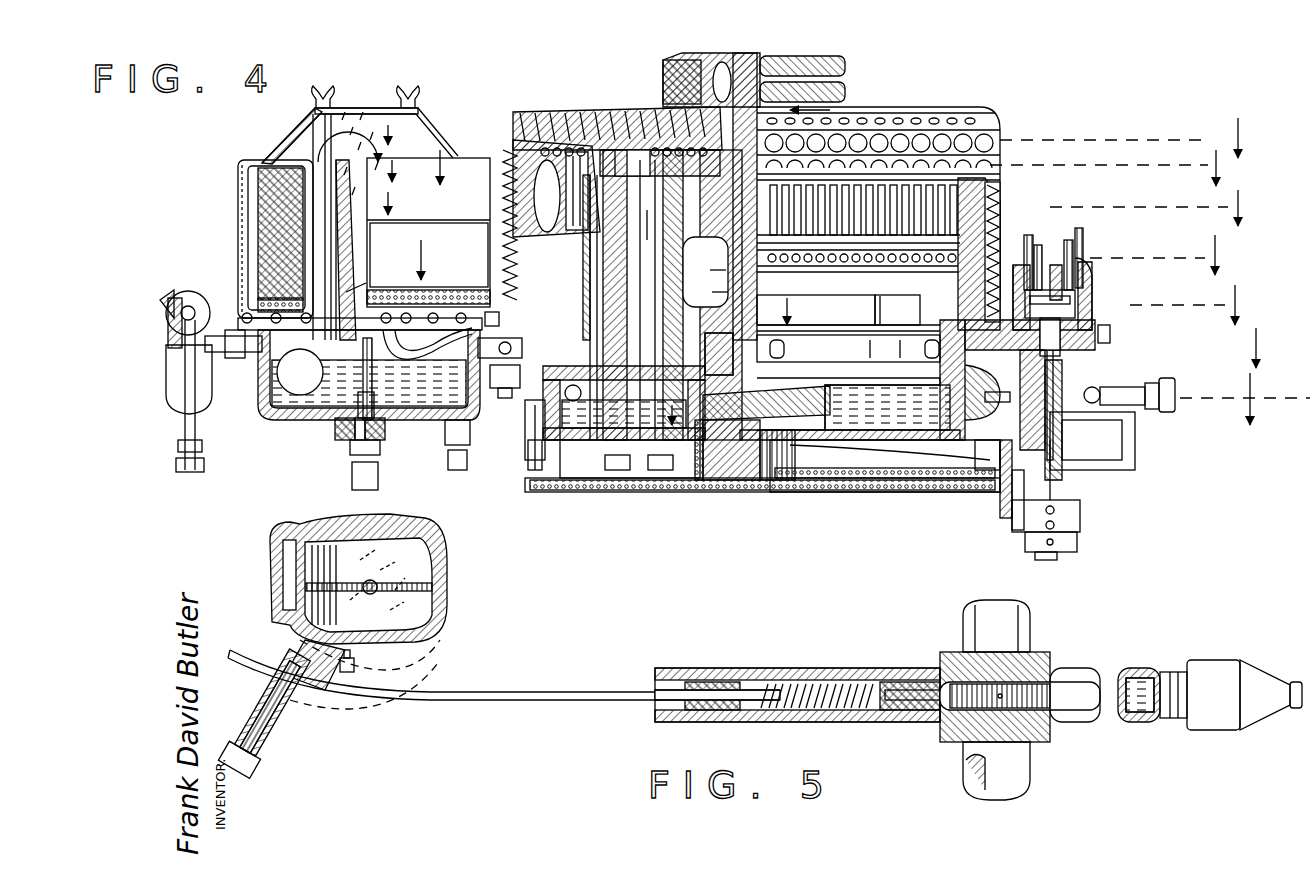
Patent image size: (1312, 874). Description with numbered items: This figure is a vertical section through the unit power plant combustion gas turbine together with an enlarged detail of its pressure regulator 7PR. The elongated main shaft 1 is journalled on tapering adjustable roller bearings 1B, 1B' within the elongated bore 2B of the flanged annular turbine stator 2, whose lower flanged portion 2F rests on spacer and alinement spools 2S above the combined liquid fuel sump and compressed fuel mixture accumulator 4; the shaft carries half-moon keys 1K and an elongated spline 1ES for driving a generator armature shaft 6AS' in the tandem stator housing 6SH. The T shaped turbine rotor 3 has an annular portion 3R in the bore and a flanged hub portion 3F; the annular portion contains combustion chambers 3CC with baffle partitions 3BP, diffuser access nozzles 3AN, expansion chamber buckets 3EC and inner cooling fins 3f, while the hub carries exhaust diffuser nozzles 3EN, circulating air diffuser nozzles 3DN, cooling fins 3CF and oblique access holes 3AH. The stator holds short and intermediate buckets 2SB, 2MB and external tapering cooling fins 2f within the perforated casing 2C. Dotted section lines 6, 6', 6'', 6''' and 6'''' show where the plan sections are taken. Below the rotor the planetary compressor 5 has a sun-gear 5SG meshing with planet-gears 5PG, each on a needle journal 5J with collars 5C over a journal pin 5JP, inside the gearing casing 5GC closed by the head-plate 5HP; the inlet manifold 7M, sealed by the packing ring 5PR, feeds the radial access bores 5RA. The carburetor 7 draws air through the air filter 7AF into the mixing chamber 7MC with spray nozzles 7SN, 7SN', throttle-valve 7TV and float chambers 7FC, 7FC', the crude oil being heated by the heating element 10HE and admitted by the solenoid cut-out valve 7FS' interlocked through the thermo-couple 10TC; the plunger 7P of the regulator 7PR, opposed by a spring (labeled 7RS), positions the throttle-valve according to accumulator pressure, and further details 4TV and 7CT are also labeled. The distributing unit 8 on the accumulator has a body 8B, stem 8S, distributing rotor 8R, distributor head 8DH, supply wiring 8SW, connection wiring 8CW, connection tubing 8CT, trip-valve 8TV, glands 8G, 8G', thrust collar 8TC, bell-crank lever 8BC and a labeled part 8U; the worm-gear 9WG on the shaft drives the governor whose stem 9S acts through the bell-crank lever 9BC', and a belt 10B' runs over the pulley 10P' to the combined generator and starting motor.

In FIG. 4, the main shaft 1 is at (745, 482).
In FIG. 4, the upper roller bearing 1B is at (705, 253).
In FIG. 4, the half-moon keys 1K is at (728, 268).
In FIG. 4, the lower roller bearing 1B' is at (708, 288).
In FIG. 4, the elongated spline 1ES is at (775, 480).
In FIG. 4, the turbine stator 2 is at (1000, 176).
In FIG. 4, the stator bore 2B is at (1000, 190).
In FIG. 4, the perforated enclosure casing 2C is at (1005, 240).
In FIG. 4, the stator flanged portion 2F is at (918, 312).
In FIG. 4, the intermediate length stator buckets 2MB is at (960, 223).
In FIG. 4, the spacer and alinement spools 2S is at (578, 310).
In FIG. 4, the shorter stator buckets 2SB is at (502, 204).
In FIG. 4, the stator cooling fins 2f is at (510, 300).
In FIG. 4, the turbine rotor 3 is at (935, 112).
In FIG. 4, the rotor flanged portion 3F is at (988, 112).
In FIG. 4, the access holes 3AH is at (585, 118).
In FIG. 4, the circulating air diffuser nozzles 3DN is at (998, 138).
In FIG. 4, the exhaust diffuser nozzles 3EN is at (996, 160).
In FIG. 4, the expansion chamber buckets 3EC is at (960, 200).
In FIG. 4, the rotor cooling fins 3CF is at (545, 125).
In FIG. 4, the baffle partition 3BP is at (500, 186).
In FIG. 4, the rotor annular portion 3R is at (500, 232).
In FIG. 4, the combustion chambers 3CC is at (504, 249).
In FIG. 4, the diffuser access nozzles 3AN is at (500, 288).
In FIG. 4, the rotor inner cooling fins 3f is at (590, 228).
In FIG. 4, the combined fuel sump and accumulator 4 is at (880, 445).
In FIG. 4, the throttle valve 4TV is at (762, 466).
In FIG. 4, the fuel mixture compressor 5 is at (700, 310).
In FIG. 4, the collar 5C is at (643, 300).
In FIG. 4, the needle journal 5J is at (652, 244).
In FIG. 4, the head-plate 5HP is at (672, 125).
In FIG. 4, the compressor drive sun-gear 5SG is at (732, 202).
In FIG. 4, the planet-gears 5PG is at (721, 354).
In FIG. 4, the radial access bores 5RA is at (848, 348).
In FIG. 4, the packing ring 5PR is at (887, 351).
In FIG. 4, the gearing casing 5GC is at (866, 312).
In FIG. 4, the journal pins 5JP is at (624, 412).
In FIG. 4, the section line 6— 6 is at (824, 166).
In FIG. 4, the section line 6'— 6' is at (814, 168).
In FIG. 4, the section line 6''— 6'' is at (827, 193).
In FIG. 4, the section line 6'''— 6''' is at (819, 280).
In FIG. 4, the section line 6''''— 6'''' is at (1200, 305).
In FIG. 4, the tandem stator housing 6SH is at (530, 468).
In FIG. 4, the generator armature shaft 6AS' is at (695, 467).
In FIG. 4, the carburetor 7 is at (352, 290).
In FIG. 5, the carburetor 7 is at (446, 560).
In FIG. 4, the air filter 7AF is at (262, 185).
In FIG. 4, the crude oil cut-out valve 7FS' is at (197, 375).
In FIG. 4, the crude oil float chamber 7FC' is at (366, 388).
In FIG. 4, the gasoline float chamber 7FC is at (442, 445).
In FIG. 4, the crude oil spray nozzle 7SN' is at (344, 379).
In FIG. 4, the gasoline spray nozzle 7SN is at (427, 359).
In FIG. 4, the venturi-tube mixing chamber 7MC is at (406, 415).
In FIG. 4, the throttle-valve 7TV is at (496, 398).
In FIG. 5, the throttle-valve 7TV is at (433, 587).
In FIG. 4, the inlet manifold 7M is at (624, 403).
In FIG. 5, the return spring 7RS is at (780, 680).
In FIG. 5, the pressure regulator 7PR is at (866, 680).
In FIG. 5, the plunger 7P is at (1048, 680).
In FIG. 5, the cap tip 7CT is at (1292, 682).
In FIG. 4, the combined ignition and fuel mixture distributing unit 8 is at (985, 485).
In FIG. 4, the ignition connection wiring 8CW is at (1080, 236).
In FIG. 4, the ignition supply wiring 8SW is at (1075, 248).
In FIG. 4, the distributor head 8DH is at (1092, 275).
In FIG. 4, the distributing rotor 8R is at (1075, 300).
In FIG. 4, the gland 8G is at (1083, 379).
In FIG. 4, the distributor main body 8B is at (1090, 356).
In FIG. 4, the union 8U is at (1062, 372).
In FIG. 4, the connection tubing 8CT is at (1094, 388).
In FIG. 4, the oscillatable stem 8S is at (1050, 552).
In FIG. 4, the bell-crank lever 8BC is at (1010, 515).
In FIG. 4, the thrust collar 8TC is at (1035, 545).
In FIG. 4, the gland 8G' is at (1057, 486).
In FIG. 4, the trip-valve 8TV is at (960, 380).
In FIG. 4, the governor bell-crank lever 9BC' is at (1225, 388).
In FIG. 4, the governor stem 9S is at (1126, 426).
In FIG. 4, the worm-gear 9WG is at (850, 409).
In FIG. 4, the belt 10B' is at (774, 80).
In FIG. 4, the pipe 10P' is at (822, 93).
In FIG. 4, the thermo-couple 10TC is at (512, 160).
In FIG. 4, the electrical heating element 10HE is at (350, 445).